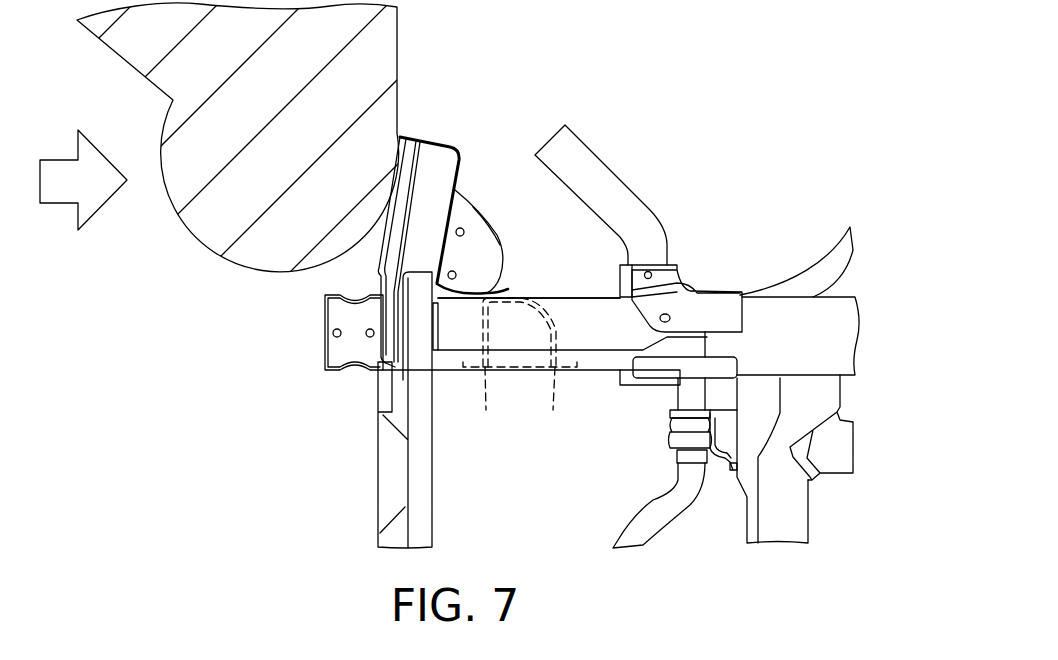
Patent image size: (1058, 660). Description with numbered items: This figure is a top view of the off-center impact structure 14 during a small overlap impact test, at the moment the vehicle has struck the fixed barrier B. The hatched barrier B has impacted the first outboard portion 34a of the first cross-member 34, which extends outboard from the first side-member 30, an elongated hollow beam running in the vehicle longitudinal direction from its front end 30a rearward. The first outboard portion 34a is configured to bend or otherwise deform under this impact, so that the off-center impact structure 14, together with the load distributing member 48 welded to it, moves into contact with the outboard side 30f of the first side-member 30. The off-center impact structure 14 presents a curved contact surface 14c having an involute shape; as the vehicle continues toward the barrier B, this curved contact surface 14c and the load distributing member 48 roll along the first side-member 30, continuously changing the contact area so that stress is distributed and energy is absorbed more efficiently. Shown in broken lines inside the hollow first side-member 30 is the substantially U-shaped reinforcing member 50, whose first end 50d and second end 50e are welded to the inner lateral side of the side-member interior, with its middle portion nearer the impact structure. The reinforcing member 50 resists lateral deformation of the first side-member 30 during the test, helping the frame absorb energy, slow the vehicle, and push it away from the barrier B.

The fixed barrier B is at (190, 240).
The off-center impact structure 14 is at (485, 208).
The curved contact surface 14c is at (503, 238).
The first side-member 30 is at (857, 334).
The front end 30a is at (324, 323).
The outboard side 30f is at (587, 297).
The first cross-member 34 is at (379, 481).
The first outboard portion 34a is at (437, 140).
The load distributing member 48 is at (508, 288).
The reinforcing member 50 is at (549, 322).
The first end 50d is at (555, 401).
The second end 50e is at (496, 404).